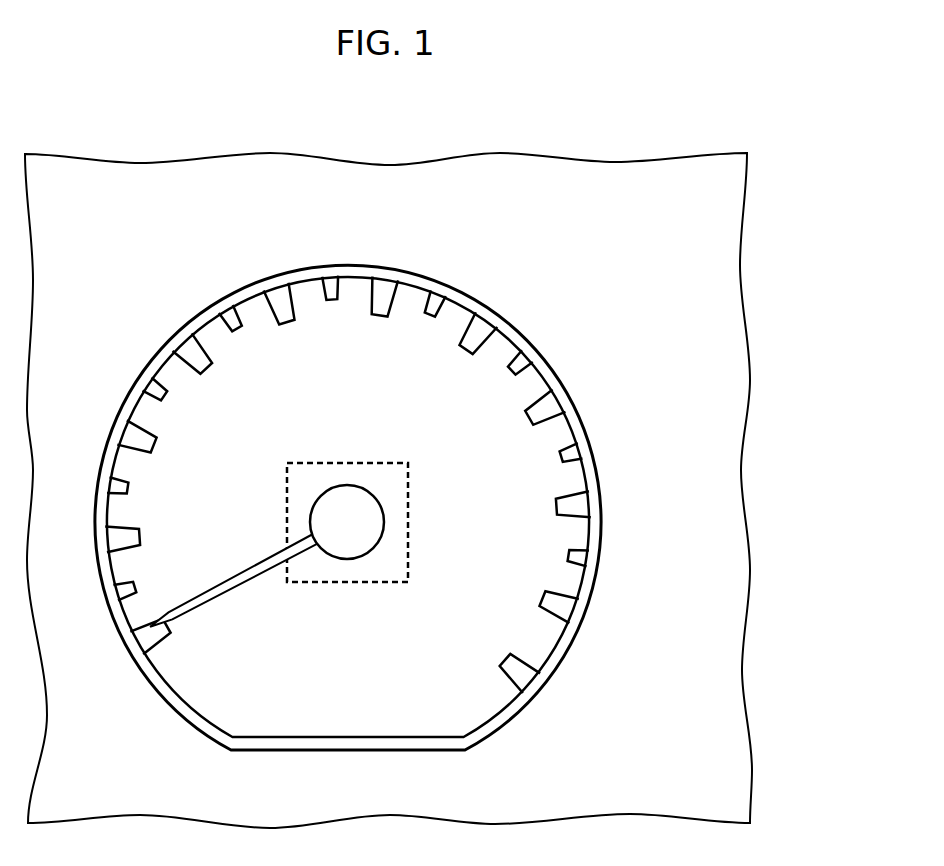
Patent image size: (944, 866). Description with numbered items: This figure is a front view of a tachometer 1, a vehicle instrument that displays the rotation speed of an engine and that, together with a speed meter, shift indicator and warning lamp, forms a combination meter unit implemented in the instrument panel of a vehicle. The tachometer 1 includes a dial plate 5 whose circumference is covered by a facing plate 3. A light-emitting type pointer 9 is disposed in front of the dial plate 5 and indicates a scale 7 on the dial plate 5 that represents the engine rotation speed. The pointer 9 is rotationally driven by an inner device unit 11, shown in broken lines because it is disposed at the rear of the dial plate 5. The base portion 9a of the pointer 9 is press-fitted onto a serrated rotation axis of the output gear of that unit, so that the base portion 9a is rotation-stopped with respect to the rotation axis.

The tachometer 1 is at (394, 514).
The facing plate 3 is at (628, 283).
The dial plate 5 is at (477, 700).
The scale 7 is at (575, 550).
The pointer 9 is at (237, 580).
The base portion 9a is at (372, 522).
The inner device unit 11 is at (353, 583).